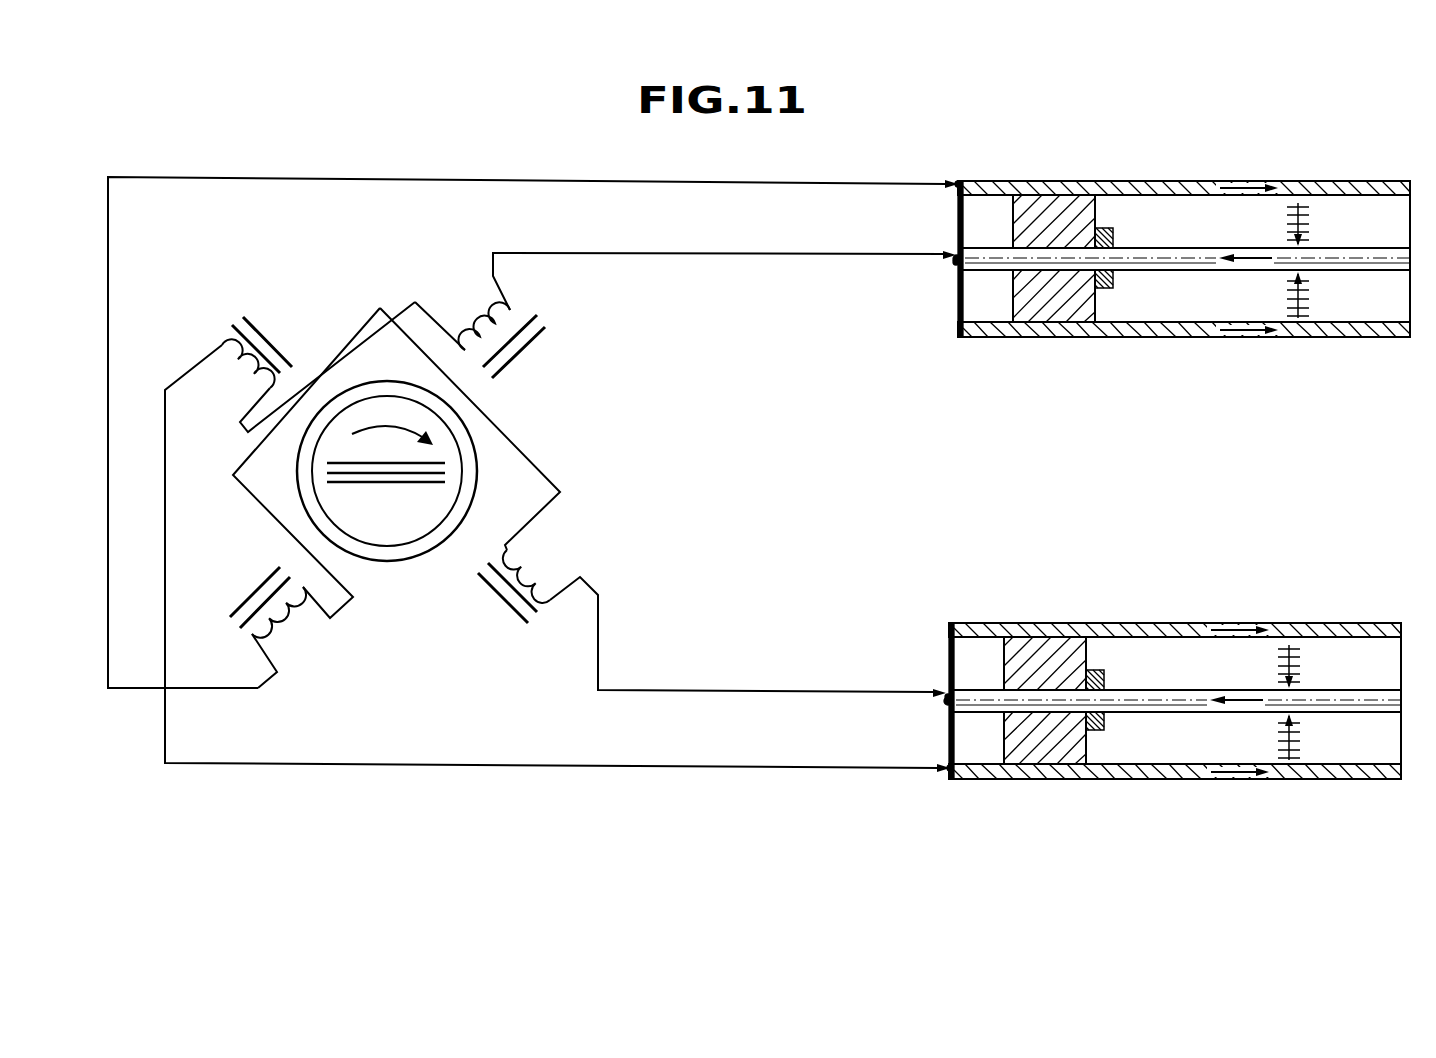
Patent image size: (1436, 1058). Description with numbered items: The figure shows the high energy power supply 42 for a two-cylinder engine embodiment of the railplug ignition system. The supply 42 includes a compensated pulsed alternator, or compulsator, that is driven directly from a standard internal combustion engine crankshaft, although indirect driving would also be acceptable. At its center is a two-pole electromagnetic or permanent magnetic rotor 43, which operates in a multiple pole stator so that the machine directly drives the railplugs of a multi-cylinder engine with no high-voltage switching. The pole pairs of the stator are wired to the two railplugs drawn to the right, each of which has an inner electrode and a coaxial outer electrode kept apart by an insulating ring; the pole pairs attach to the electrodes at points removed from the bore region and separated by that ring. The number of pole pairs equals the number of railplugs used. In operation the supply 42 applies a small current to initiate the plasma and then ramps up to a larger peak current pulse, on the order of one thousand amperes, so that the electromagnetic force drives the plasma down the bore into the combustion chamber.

The high energy power supply 42 is at (435, 466).
The rotor 43 is at (388, 538).